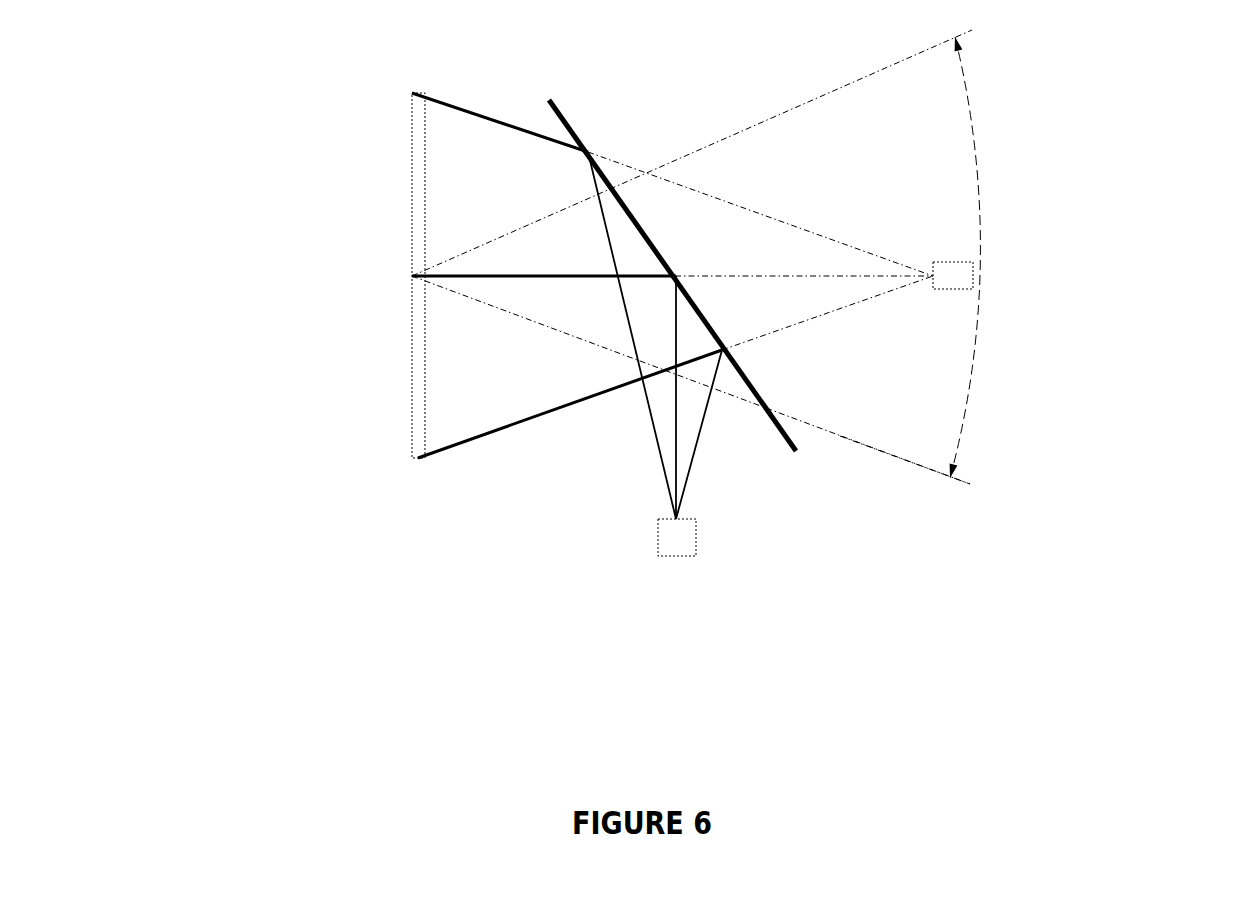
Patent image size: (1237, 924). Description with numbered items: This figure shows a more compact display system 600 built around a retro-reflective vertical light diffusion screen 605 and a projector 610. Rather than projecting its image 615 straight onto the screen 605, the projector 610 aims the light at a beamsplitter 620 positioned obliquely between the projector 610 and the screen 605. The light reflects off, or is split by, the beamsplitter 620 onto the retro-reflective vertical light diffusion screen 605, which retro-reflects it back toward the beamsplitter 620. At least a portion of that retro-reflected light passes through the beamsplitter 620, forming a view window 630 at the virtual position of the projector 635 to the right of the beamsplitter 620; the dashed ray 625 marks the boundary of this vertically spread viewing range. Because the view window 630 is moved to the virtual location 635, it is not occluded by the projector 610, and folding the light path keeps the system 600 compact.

The display system 600 is at (698, 46).
The retro-reflective vertical light diffusion screen 605 is at (404, 355).
The projector 610 is at (680, 557).
The image 615 is at (657, 452).
The beamsplitter 620 is at (704, 303).
The reflected light ray boundary 625 is at (906, 465).
The view window 630 is at (983, 320).
The virtual position of the projector 635 is at (952, 290).